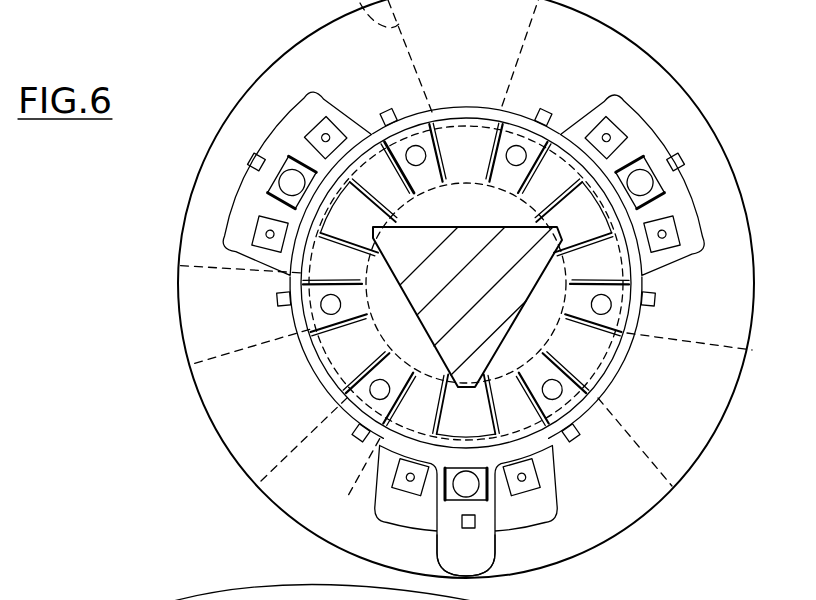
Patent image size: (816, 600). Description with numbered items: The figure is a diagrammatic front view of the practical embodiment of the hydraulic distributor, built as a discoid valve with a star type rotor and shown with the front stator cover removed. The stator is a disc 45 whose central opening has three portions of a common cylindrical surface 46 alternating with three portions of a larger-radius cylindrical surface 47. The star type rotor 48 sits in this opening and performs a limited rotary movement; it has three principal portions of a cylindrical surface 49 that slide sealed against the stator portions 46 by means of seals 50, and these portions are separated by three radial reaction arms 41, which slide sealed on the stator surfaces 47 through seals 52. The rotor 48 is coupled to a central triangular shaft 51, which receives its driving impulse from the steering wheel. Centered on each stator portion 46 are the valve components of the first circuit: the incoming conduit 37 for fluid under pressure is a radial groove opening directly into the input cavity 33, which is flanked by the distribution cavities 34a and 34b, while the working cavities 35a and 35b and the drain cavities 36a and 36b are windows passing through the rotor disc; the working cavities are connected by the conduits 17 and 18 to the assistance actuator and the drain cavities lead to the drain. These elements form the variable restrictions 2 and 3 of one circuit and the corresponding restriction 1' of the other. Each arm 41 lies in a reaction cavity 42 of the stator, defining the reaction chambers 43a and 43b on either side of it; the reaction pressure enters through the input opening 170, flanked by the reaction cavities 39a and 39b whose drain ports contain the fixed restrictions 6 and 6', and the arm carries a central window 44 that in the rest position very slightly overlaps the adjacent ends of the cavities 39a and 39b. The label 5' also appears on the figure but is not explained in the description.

The disc 45 is at (190, 322).
The conduit for fluid under pressure 37 is at (538, 243).
The portions of a common cylindrical surface 46 is at (447, 108).
The star type rotor 48 is at (594, 425).
The principal portions of a cylindrical surface 49 is at (320, 380).
The input cavity 33 is at (614, 344).
The variable restriction 1' is at (466, 216).
The triangular shaft 51 is at (470, 240).
The drain cavity 36b is at (360, 221).
The drain cavity 36a is at (440, 410).
The conduit 18 is at (330, 303).
The conduit 17 is at (390, 391).
The variable restriction 3 is at (380, 166).
The variable restriction 2 is at (365, 130).
The reaction cavity 39a is at (637, 110).
The portions of a common cylindrical surface 47 is at (240, 225).
The reaction cavity 42 is at (555, 506).
The reaction arm 41 is at (253, 182).
The fixed restriction 6 is at (606, 106).
The reaction cavity 39b is at (664, 232).
The fixed restriction 6' is at (481, 190).
The reaction chamber 43b is at (400, 508).
The reaction chamber 43a is at (537, 512).
The seals 50 is at (385, 112).
The tab 5' is at (237, 205).
The seals 52 is at (675, 160).
The central window 44 is at (443, 522).
The input opening 170 is at (483, 562).
The distribution cavity 34b is at (209, 270).
The working cavity 35b is at (302, 324).
The working cavity 35a is at (309, 440).
The distribution cavity 34a is at (344, 471).